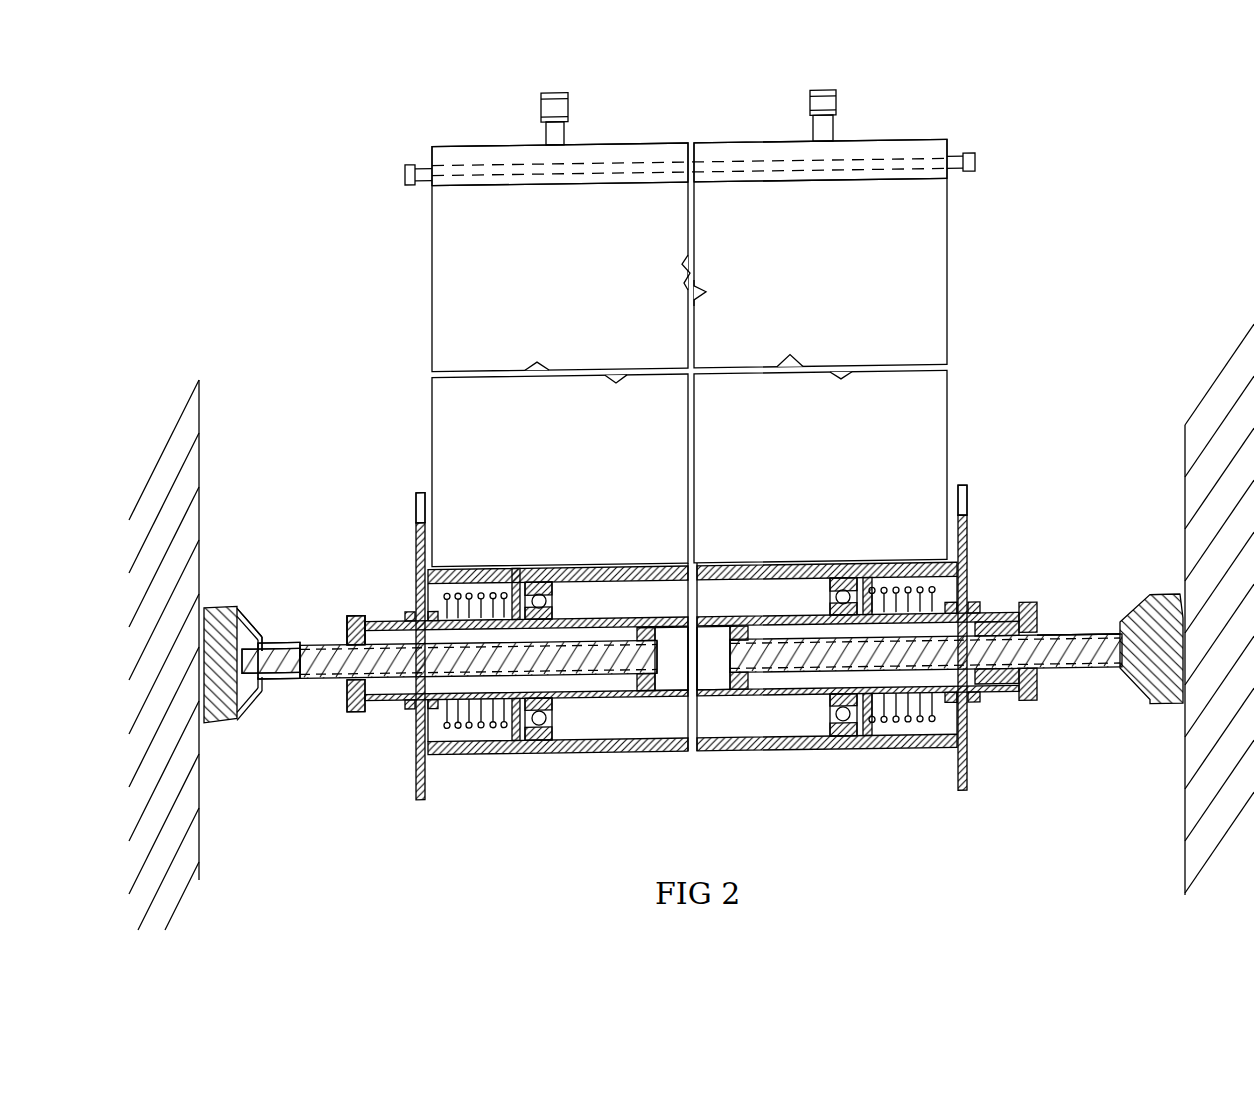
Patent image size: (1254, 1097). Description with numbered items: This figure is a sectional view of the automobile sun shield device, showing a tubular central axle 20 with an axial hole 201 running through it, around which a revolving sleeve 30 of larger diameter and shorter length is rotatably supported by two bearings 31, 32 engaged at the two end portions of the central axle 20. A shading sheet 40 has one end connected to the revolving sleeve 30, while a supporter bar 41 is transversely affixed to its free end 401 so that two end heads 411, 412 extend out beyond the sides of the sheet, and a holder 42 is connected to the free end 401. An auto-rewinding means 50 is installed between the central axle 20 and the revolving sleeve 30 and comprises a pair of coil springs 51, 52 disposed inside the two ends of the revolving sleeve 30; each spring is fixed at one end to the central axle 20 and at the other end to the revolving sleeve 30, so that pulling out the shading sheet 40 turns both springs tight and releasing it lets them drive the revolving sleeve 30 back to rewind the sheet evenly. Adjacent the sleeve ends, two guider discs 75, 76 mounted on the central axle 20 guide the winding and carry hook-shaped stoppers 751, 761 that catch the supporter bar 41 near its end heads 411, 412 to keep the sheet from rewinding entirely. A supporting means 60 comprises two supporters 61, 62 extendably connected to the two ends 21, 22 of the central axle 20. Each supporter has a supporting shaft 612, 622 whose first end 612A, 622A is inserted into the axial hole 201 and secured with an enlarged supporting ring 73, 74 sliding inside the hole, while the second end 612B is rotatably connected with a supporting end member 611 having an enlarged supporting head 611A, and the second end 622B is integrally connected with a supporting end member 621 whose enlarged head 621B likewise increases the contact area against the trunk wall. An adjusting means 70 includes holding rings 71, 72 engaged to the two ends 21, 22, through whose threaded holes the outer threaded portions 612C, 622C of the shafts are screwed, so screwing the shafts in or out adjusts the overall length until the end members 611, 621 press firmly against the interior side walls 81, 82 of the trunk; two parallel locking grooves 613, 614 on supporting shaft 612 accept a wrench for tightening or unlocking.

The tubular central axle 20 is at (574, 747).
The axial hole 201 is at (675, 676).
The end of the central axle 21 is at (375, 621).
The end of the central axle 22 is at (1010, 617).
The revolving sleeve 30 is at (560, 748).
The bearing 31 is at (545, 748).
The bearing 32 is at (855, 742).
The shading sheet 40 is at (915, 297).
The free end of the shading sheet 401 is at (905, 154).
The supporter bar 41 is at (388, 158).
The end head of the supporter bar 411 is at (410, 185).
The end head of the supporter bar 412 is at (967, 155).
The holder 42 is at (558, 84).
The auto-rewinding means 50 is at (490, 747).
The coil spring 51 is at (482, 744).
The coil spring 52 is at (933, 713).
The supporting means 60 is at (379, 757).
The supporter 61 is at (318, 723).
The supporting end member 611 is at (242, 717).
The enlarged supporting head 611A is at (208, 596).
The supporting shaft 612 is at (316, 719).
The first end of the supporting shaft 612A is at (617, 636).
The second end of the supporting shaft 612B is at (258, 614).
The outer threaded portion 612C is at (338, 687).
The locking groove 613 is at (310, 628).
The locking groove 614 is at (304, 684).
The supporter 62 is at (1064, 705).
The supporting end member 621 is at (1142, 705).
The right bracket face 621B is at (1170, 600).
The supporting shaft 622 is at (1035, 705).
The first end of the supporting shaft 622A is at (760, 641).
The second end of the supporting shaft 622B is at (1112, 638).
The outer threaded portion 622C is at (1074, 631).
The adjusting means 70 is at (323, 572).
The holding ring 71 is at (383, 704).
The holding ring 72 is at (978, 704).
The supporting ring 73 is at (648, 692).
The supporting ring 74 is at (742, 692).
The guider disc 75 is at (418, 793).
The hook-shaped stopper 751 is at (414, 495).
The guider disc 76 is at (962, 795).
The hook-shaped stopper 761 is at (965, 504).
The interior side wall 81 is at (200, 838).
The interior side wall 82 is at (1190, 766).